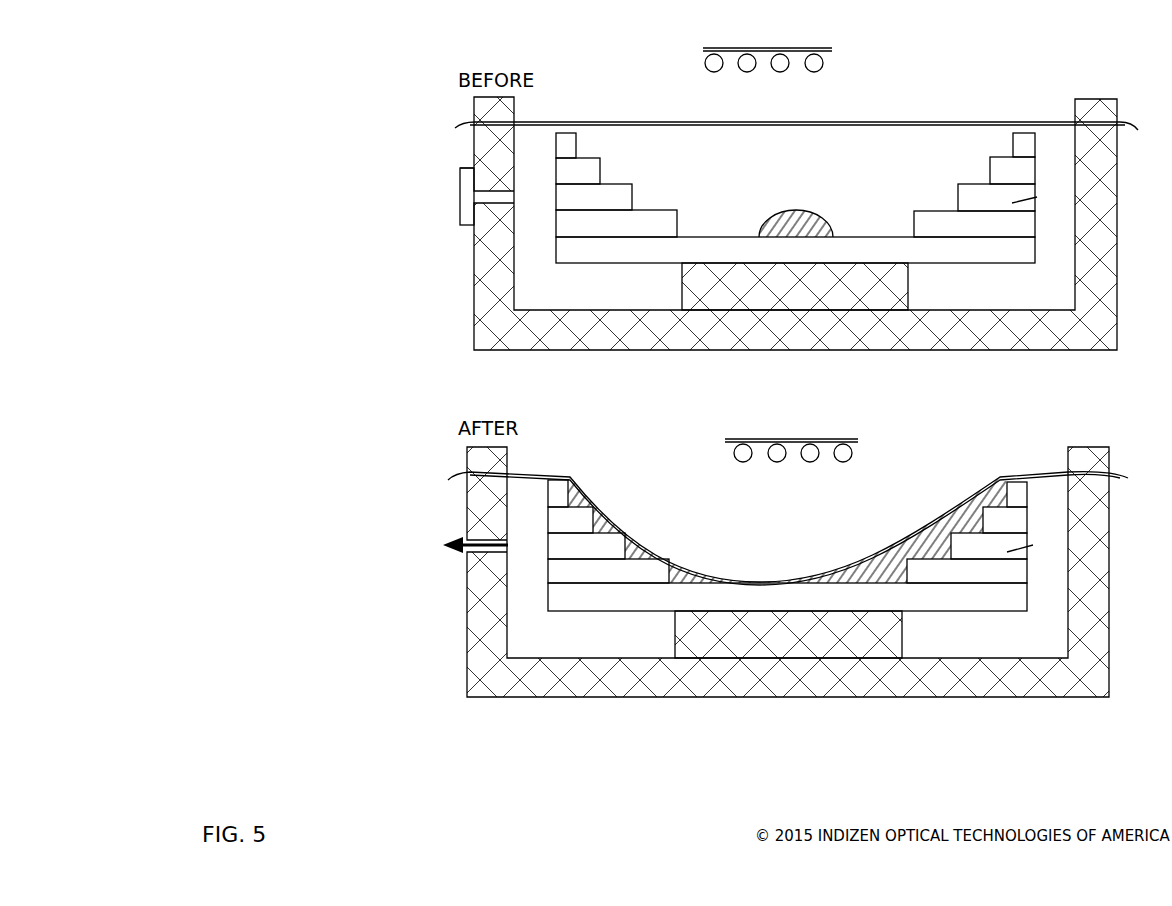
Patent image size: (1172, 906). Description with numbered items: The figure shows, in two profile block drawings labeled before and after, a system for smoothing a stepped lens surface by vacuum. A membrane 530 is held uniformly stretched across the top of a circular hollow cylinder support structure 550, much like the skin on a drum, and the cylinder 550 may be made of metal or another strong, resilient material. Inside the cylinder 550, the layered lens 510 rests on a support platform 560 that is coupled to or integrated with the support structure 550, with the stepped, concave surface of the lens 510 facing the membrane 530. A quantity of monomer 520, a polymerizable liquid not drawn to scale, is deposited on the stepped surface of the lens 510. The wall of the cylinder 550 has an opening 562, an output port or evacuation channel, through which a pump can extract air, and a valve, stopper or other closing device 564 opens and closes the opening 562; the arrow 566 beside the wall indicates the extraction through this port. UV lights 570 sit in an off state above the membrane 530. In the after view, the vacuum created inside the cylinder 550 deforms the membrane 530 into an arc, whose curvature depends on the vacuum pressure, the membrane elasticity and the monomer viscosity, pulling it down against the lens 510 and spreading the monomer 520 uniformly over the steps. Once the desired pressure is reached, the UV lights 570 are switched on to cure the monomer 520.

The layered lens 510 is at (792, 372).
The monomer 520 is at (820, 222).
The membrane 530 is at (822, 123).
The cylinder support structure 550 is at (792, 397).
The support platform 560 is at (892, 275).
The opening 562 is at (485, 197).
The closing device 564 is at (459, 172).
The direction of motion arrow 566 is at (458, 558).
The UV lights 570 is at (706, 50).